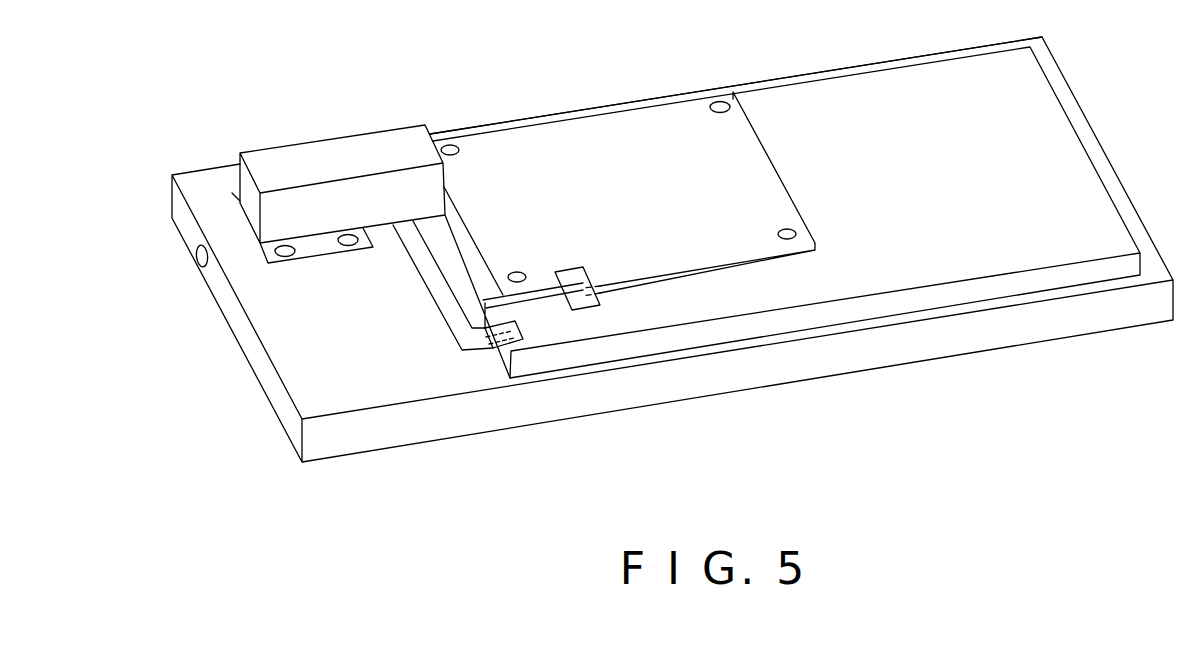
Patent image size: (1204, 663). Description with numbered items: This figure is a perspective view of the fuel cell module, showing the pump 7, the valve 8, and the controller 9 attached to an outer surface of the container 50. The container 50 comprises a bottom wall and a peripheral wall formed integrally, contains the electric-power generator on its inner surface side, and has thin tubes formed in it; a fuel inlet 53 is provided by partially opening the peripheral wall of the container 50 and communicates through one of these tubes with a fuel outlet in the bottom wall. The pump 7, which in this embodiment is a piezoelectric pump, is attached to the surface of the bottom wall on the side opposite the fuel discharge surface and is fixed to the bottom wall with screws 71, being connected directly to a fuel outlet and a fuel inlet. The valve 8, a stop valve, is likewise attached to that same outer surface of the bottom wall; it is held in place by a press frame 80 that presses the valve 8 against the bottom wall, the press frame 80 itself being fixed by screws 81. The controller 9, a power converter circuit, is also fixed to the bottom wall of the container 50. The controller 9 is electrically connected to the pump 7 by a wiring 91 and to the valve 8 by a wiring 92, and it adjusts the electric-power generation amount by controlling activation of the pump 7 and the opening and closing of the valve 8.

The pump 7 is at (582, 125).
The valve 8 is at (250, 213).
The controller 9 is at (861, 70).
The container 50 is at (1041, 328).
The fuel inlet 53 is at (197, 256).
The screws 71 is at (450, 143).
The press frame 80 is at (333, 139).
The screws 81 is at (342, 248).
The wiring 91 is at (583, 310).
The wiring 92 is at (480, 352).